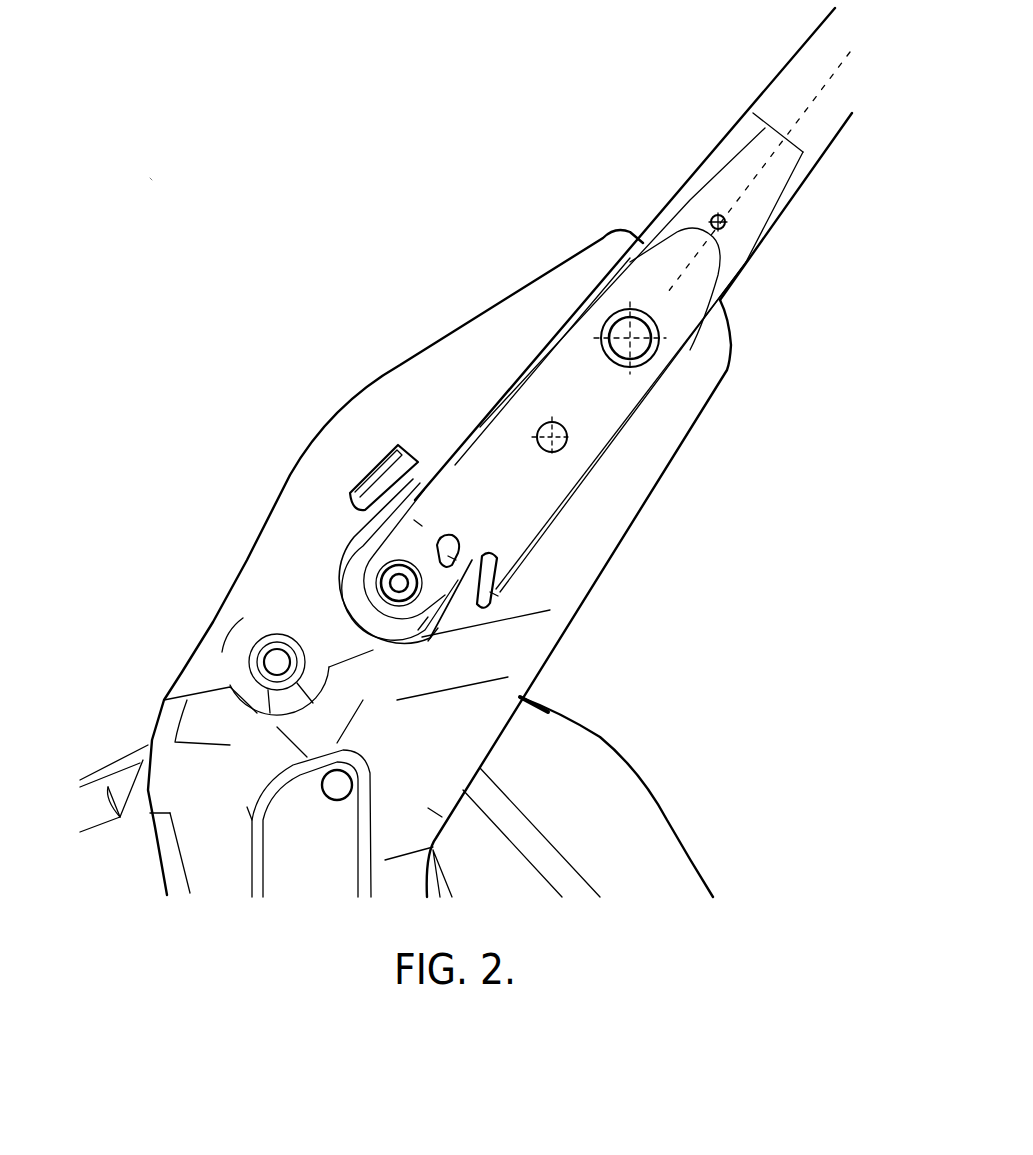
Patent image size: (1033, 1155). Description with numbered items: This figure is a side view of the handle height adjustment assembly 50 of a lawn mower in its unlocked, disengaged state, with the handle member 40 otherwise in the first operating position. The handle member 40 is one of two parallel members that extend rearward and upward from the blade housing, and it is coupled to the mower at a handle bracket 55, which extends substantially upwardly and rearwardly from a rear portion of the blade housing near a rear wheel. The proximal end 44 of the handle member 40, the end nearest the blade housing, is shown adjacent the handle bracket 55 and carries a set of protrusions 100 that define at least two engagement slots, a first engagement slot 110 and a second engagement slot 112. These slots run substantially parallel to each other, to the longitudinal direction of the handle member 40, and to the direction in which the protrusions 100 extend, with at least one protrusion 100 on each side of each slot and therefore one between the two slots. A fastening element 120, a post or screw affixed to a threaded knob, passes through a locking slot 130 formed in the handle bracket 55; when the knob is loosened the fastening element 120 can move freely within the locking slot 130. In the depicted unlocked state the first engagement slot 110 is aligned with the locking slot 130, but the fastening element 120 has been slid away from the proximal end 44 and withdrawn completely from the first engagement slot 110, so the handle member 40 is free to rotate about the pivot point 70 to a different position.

The handle member 40 is at (774, 142).
The proximal end 44 is at (488, 428).
The handle height adjustment assembly 50 is at (145, 172).
The handle bracket 55 is at (245, 567).
The pivot point 70 is at (630, 337).
The protrusion 100 is at (418, 522).
The first engagement slot 110 is at (494, 540).
The second engagement slot 112 is at (428, 517).
The fastening element 120 is at (382, 593).
The locking slot 130 is at (426, 541).